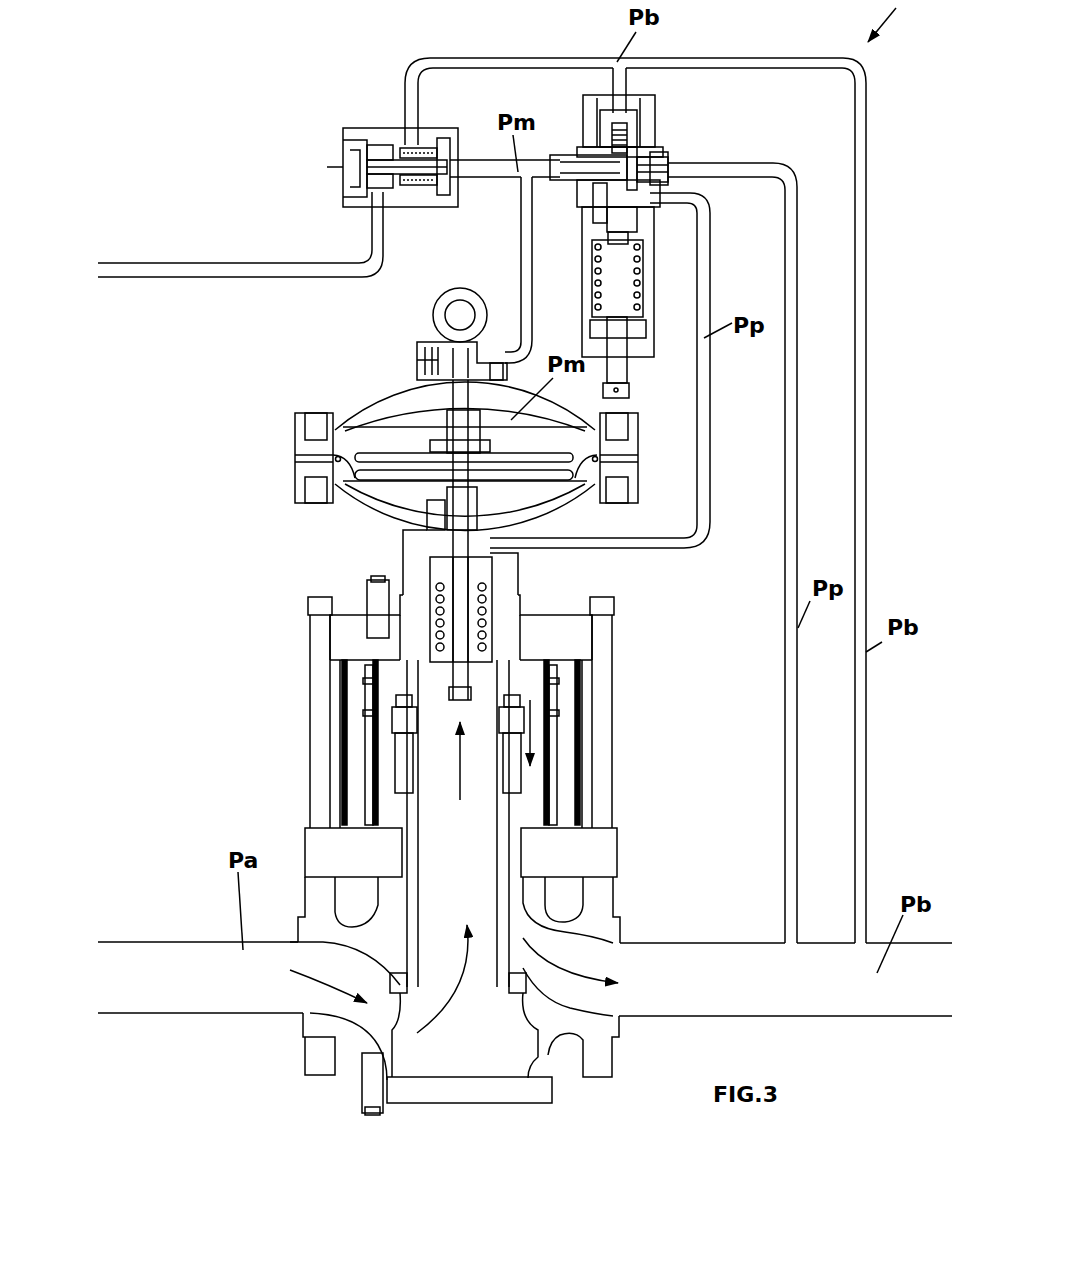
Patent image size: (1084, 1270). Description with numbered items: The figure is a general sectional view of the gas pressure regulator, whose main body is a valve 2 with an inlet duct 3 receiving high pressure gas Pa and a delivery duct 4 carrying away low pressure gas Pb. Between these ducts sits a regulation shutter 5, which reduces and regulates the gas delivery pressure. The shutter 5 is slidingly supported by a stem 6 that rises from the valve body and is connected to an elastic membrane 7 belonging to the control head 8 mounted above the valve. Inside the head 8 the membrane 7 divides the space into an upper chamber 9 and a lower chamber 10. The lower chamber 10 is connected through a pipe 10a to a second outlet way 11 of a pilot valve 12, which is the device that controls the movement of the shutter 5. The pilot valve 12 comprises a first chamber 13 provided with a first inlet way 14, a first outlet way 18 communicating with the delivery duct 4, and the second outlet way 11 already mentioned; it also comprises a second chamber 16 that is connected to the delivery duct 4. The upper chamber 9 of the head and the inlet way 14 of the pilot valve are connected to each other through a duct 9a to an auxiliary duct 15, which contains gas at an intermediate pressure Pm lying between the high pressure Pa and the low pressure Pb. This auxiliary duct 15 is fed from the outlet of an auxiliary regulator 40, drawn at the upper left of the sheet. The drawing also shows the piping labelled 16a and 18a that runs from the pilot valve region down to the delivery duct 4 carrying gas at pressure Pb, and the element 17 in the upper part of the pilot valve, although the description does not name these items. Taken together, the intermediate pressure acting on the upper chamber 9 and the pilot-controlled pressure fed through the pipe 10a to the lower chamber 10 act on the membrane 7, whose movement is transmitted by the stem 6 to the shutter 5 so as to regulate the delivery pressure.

The valve 2 is at (250, 578).
The inlet duct 3 is at (168, 912).
The delivery duct 4 is at (653, 912).
The regulation shutter 5 is at (411, 690).
The stem 6 is at (430, 566).
The elastic membrane 7 is at (350, 468).
The control head 8 is at (428, 306).
The upper chamber 9 is at (533, 454).
The duct 9a is at (520, 277).
The lower chamber 10 is at (521, 502).
The pipe 10a is at (713, 500).
The second outlet way 11 is at (714, 202).
The pilot valve 12 is at (662, 82).
The first chamber 13 is at (652, 148).
The first inlet way 14 is at (566, 150).
The auxiliary duct 15 is at (491, 148).
The second chamber 16 is at (641, 127).
The pipe 16a is at (735, 58).
The spring housing 17 is at (590, 118).
The first outlet way 18 is at (692, 152).
The pipe 18a is at (801, 263).
The auxiliary regulator 40 is at (378, 108).